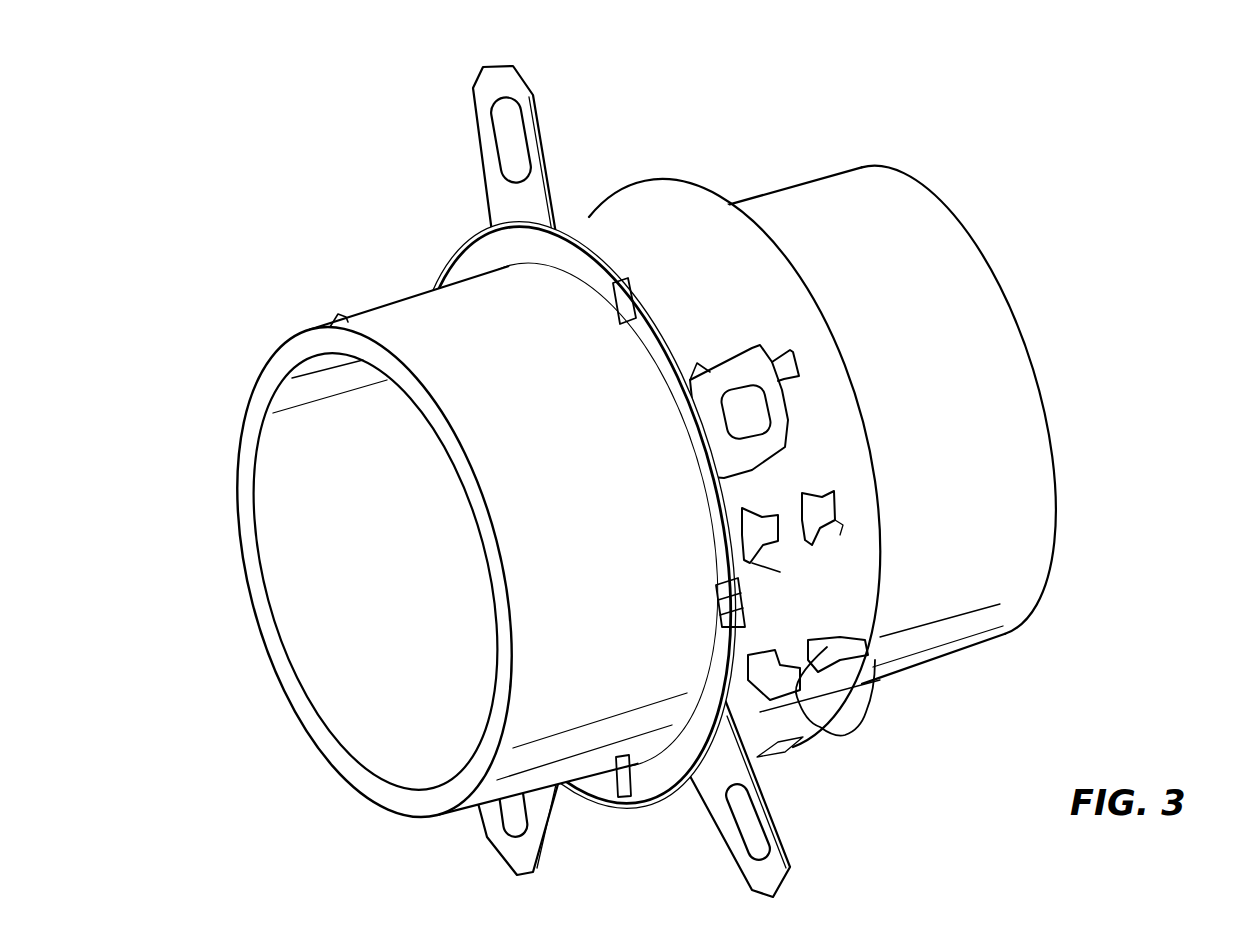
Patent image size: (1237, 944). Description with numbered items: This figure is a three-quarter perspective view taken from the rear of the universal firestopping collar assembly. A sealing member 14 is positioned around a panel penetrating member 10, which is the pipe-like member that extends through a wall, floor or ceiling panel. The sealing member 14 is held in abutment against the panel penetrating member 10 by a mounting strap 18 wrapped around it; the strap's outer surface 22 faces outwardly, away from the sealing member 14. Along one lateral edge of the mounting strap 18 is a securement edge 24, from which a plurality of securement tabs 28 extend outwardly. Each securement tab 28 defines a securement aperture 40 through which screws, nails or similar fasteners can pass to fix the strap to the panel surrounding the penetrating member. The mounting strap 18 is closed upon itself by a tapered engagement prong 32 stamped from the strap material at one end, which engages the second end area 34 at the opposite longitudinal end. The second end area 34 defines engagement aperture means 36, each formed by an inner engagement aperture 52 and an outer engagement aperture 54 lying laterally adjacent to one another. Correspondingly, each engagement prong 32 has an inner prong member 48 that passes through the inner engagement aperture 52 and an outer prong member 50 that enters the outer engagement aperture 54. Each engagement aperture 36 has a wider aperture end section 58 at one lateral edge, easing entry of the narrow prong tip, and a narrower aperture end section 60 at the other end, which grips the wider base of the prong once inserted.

The panel penetrating member 10 is at (961, 509).
The sealing member 14 is at (490, 491).
The mounting strap 18 is at (660, 178).
The outer surface 22 is at (675, 259).
The securement edge 24 is at (580, 240).
The securement tabs 28 is at (487, 96).
The engagement prong 32 is at (830, 728).
The second end area 34 is at (833, 615).
The engagement aperture means 36 is at (800, 357).
The securement apertures 40 is at (515, 140).
The inner prong member 48 is at (745, 655).
The outer prong member 50 is at (862, 645).
The inner engagement aperture 52 is at (750, 506).
The outer engagement aperture 54 is at (827, 490).
The wider aperture end section 58 is at (780, 593).
The narrower aperture end section 60 is at (774, 546).